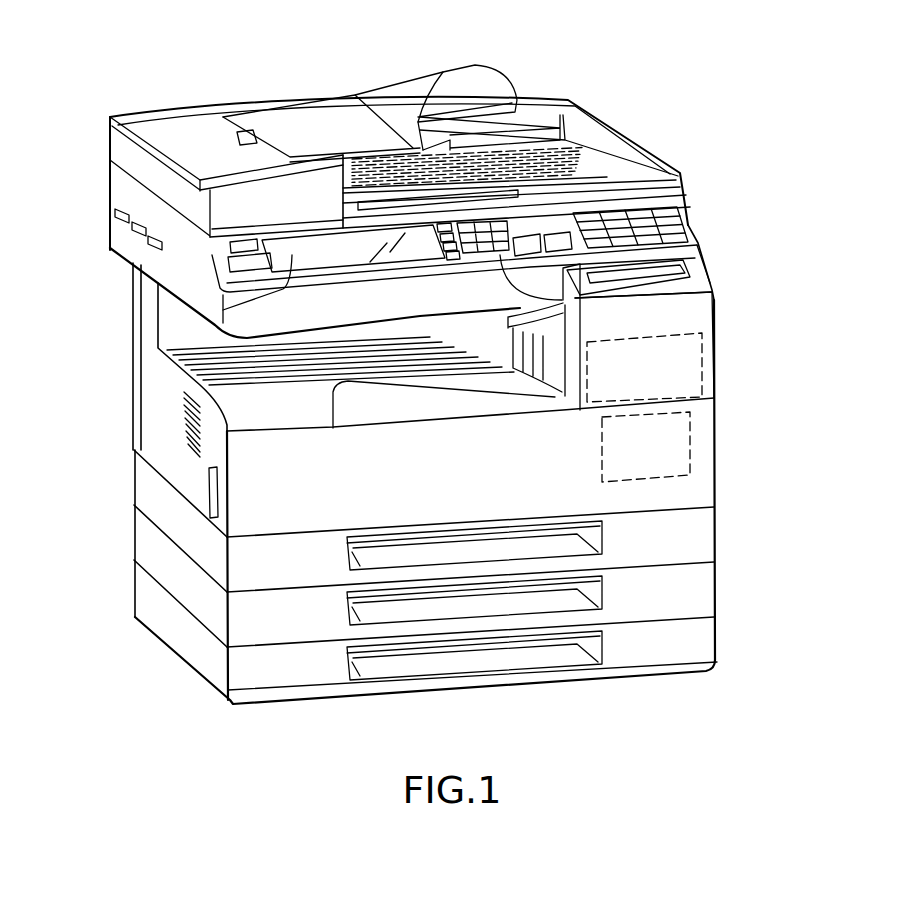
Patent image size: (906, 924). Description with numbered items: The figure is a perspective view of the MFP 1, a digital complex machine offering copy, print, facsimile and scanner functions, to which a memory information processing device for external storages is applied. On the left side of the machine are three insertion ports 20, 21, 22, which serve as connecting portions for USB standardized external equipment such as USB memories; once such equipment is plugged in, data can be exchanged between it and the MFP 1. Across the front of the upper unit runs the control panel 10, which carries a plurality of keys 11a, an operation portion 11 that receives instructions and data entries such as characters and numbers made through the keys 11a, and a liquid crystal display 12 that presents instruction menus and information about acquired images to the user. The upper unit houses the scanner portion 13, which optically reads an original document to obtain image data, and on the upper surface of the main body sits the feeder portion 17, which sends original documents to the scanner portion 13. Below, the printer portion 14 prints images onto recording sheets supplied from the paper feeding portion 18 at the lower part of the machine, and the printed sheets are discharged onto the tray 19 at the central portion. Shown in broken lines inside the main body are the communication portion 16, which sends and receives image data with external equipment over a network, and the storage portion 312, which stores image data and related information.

The MFP 1 is at (82, 36).
The control panel 10 is at (421, 276).
The operation portion 11 is at (550, 224).
The keys 11a is at (565, 298).
The display 12 is at (223, 310).
The scanner portion 13 is at (98, 144).
The printer portion 14 is at (729, 403).
The communication portion 16 is at (693, 457).
The feeder portion 17 is at (295, 127).
The paper feeding portion 18 is at (147, 487).
The tray 19 is at (187, 357).
The insertion port 20 is at (117, 213).
The insertion port 21 is at (132, 228).
The insertion port 22 is at (147, 245).
The storage portion 312 is at (707, 363).